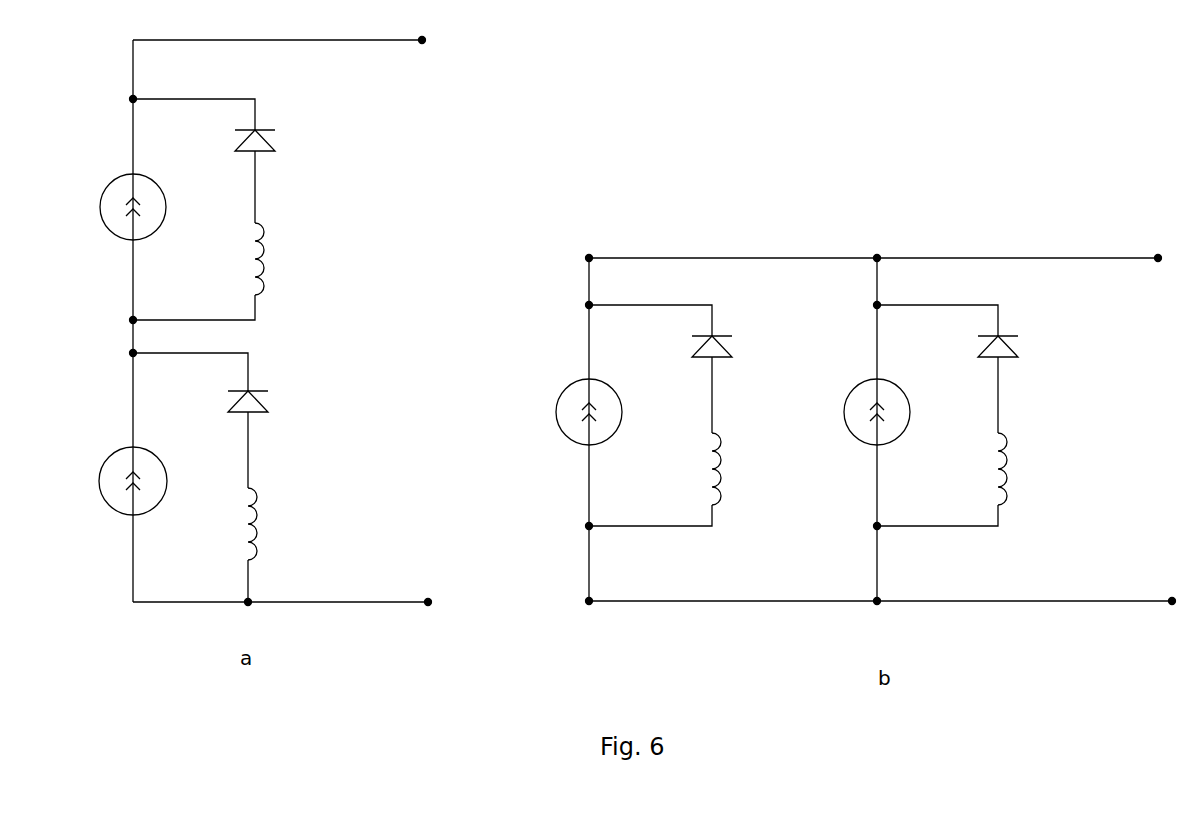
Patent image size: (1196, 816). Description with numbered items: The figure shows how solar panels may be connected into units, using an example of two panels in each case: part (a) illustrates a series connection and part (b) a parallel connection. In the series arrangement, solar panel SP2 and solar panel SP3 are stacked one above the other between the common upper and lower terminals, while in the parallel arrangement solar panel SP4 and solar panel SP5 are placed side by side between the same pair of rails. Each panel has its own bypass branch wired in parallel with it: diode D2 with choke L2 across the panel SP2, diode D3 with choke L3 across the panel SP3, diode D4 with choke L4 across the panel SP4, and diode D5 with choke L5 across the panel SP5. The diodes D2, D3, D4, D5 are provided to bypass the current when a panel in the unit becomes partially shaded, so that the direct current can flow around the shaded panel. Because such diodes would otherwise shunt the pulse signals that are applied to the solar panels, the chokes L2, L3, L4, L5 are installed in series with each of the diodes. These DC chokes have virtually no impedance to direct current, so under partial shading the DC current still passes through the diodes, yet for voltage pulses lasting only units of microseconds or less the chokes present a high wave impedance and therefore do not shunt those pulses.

The solar panel SP2 is at (97, 207).
The solar panel SP3 is at (102, 481).
The solar panel SP4 is at (553, 412).
The solar panel SP5 is at (853, 412).
The diode D2 is at (274, 139).
The diode D3 is at (271, 403).
The diode D4 is at (731, 345).
The diode D5 is at (1021, 345).
The choke L2 is at (278, 259).
The choke L3 is at (272, 524).
The choke L4 is at (734, 469).
The choke L5 is at (1023, 469).